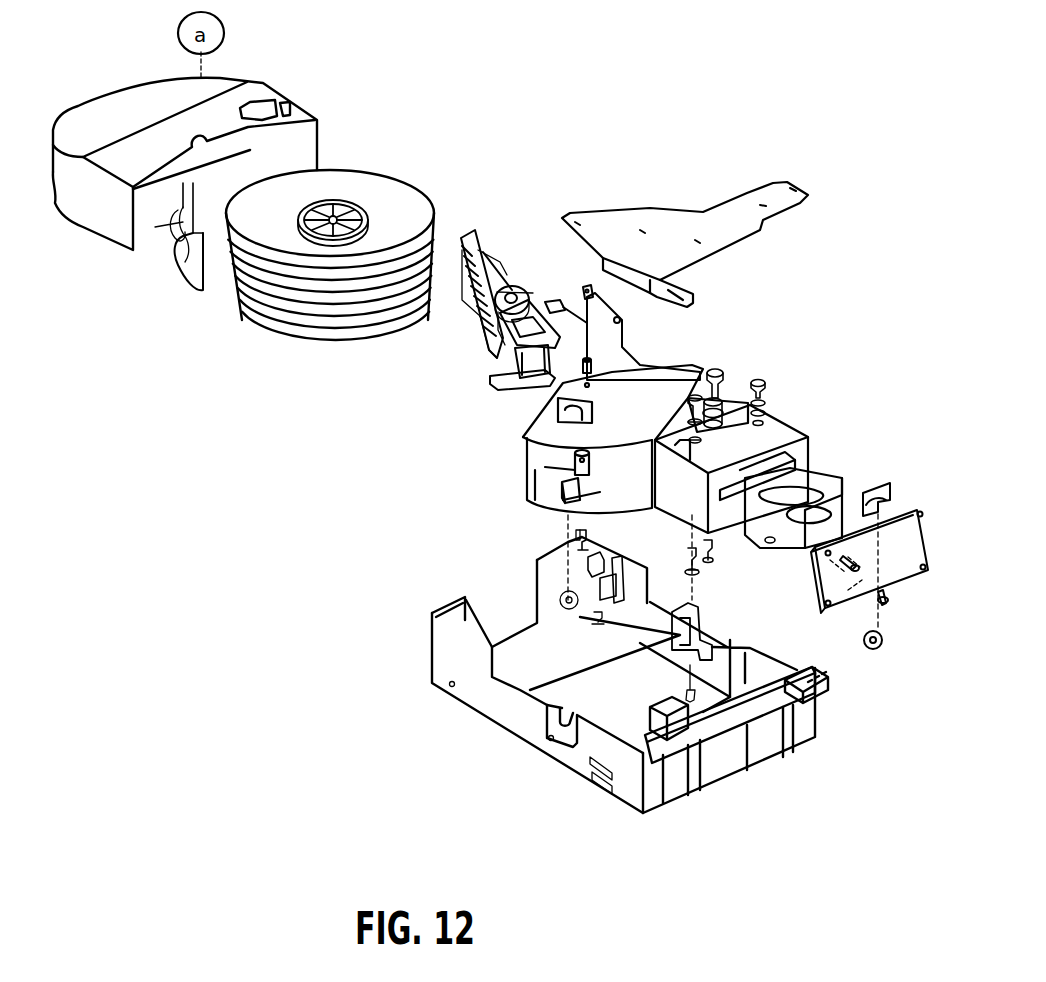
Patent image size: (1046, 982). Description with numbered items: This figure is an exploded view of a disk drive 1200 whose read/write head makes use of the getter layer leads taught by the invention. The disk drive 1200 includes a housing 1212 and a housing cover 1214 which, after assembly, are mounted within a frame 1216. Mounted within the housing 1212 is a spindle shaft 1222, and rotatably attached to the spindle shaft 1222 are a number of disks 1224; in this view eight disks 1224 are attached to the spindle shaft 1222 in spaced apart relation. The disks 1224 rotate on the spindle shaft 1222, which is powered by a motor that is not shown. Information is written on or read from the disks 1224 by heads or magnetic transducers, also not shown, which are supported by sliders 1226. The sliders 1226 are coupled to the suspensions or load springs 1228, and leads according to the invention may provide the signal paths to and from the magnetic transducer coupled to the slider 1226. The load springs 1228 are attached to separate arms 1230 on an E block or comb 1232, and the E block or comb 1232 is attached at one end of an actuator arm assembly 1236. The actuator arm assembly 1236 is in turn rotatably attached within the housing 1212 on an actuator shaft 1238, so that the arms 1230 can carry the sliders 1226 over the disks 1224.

The disk drive 1200 is at (481, 150).
The housing 1212 is at (693, 383).
The housing cover 1214 is at (110, 228).
The frame 1216 is at (485, 700).
The spindle shaft 1222 is at (340, 222).
The disks 1224 is at (281, 317).
The sliders 1226 is at (467, 233).
The suspensions or load springs 1228 is at (483, 253).
The arms 1230 is at (497, 270).
The E block or comb 1232 is at (458, 297).
The actuator arm assembly 1236 is at (483, 333).
The actuator shaft 1238 is at (513, 295).